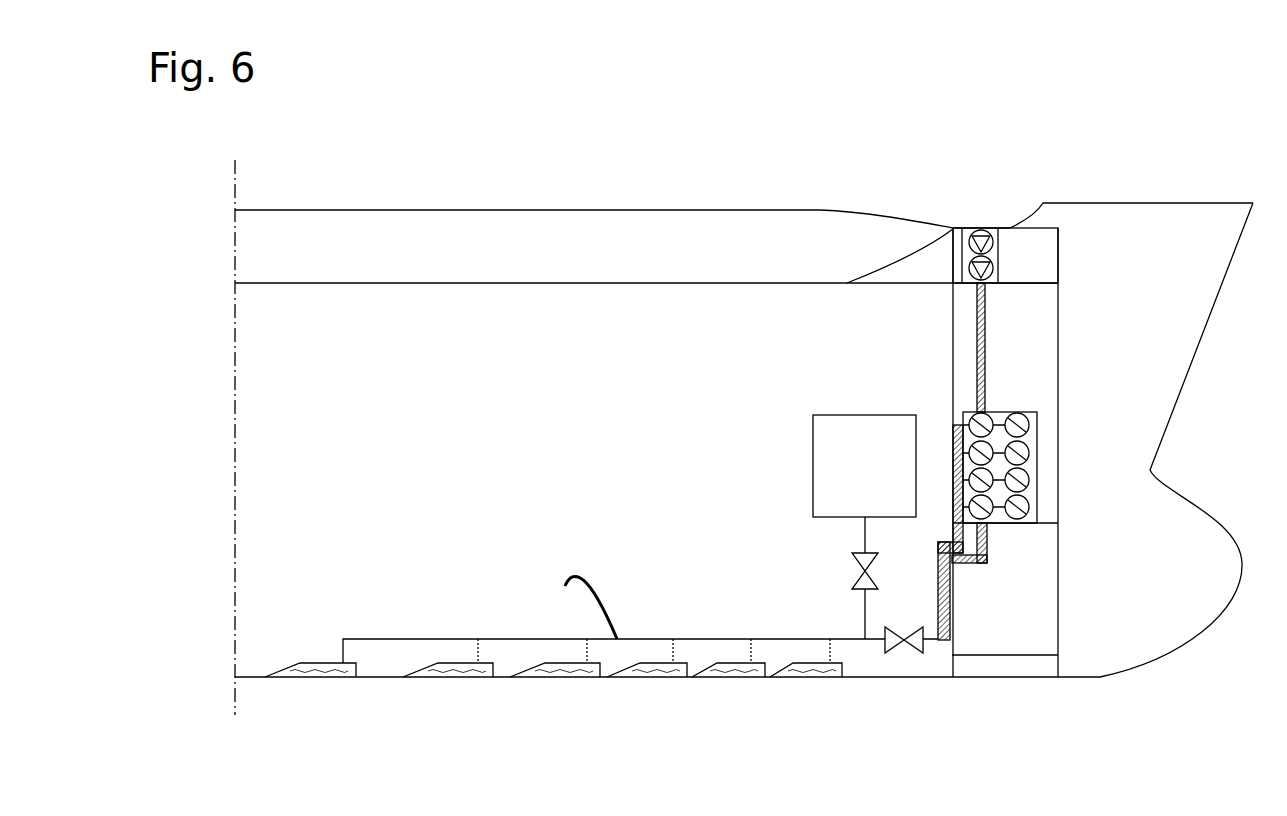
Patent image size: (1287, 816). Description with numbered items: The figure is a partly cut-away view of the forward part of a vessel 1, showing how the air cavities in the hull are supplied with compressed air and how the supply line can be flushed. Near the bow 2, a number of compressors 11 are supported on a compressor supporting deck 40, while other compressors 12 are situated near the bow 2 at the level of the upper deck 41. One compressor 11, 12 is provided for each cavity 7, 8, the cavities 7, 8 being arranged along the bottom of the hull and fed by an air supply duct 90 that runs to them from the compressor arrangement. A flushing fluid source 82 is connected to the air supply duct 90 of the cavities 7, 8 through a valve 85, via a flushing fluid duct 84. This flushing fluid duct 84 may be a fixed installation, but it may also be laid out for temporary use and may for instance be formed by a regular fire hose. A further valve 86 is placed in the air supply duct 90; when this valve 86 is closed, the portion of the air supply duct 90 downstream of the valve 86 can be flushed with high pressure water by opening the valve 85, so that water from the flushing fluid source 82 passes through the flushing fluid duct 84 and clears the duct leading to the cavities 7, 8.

The vessel 1 is at (661, 190).
The bow 2 is at (1178, 630).
The cavity 7 is at (468, 677).
The cavity 8 is at (813, 677).
The compressor 11 is at (1038, 469).
The compressor 12 is at (1022, 258).
The compressor supporting deck 40 is at (1043, 523).
The upper deck 41 is at (777, 283).
The flushing fluid source 82 is at (828, 470).
The flushing fluid duct 84 is at (862, 536).
The valve 85 is at (877, 572).
The valve 86 is at (912, 645).
The air supply duct 90 is at (570, 607).